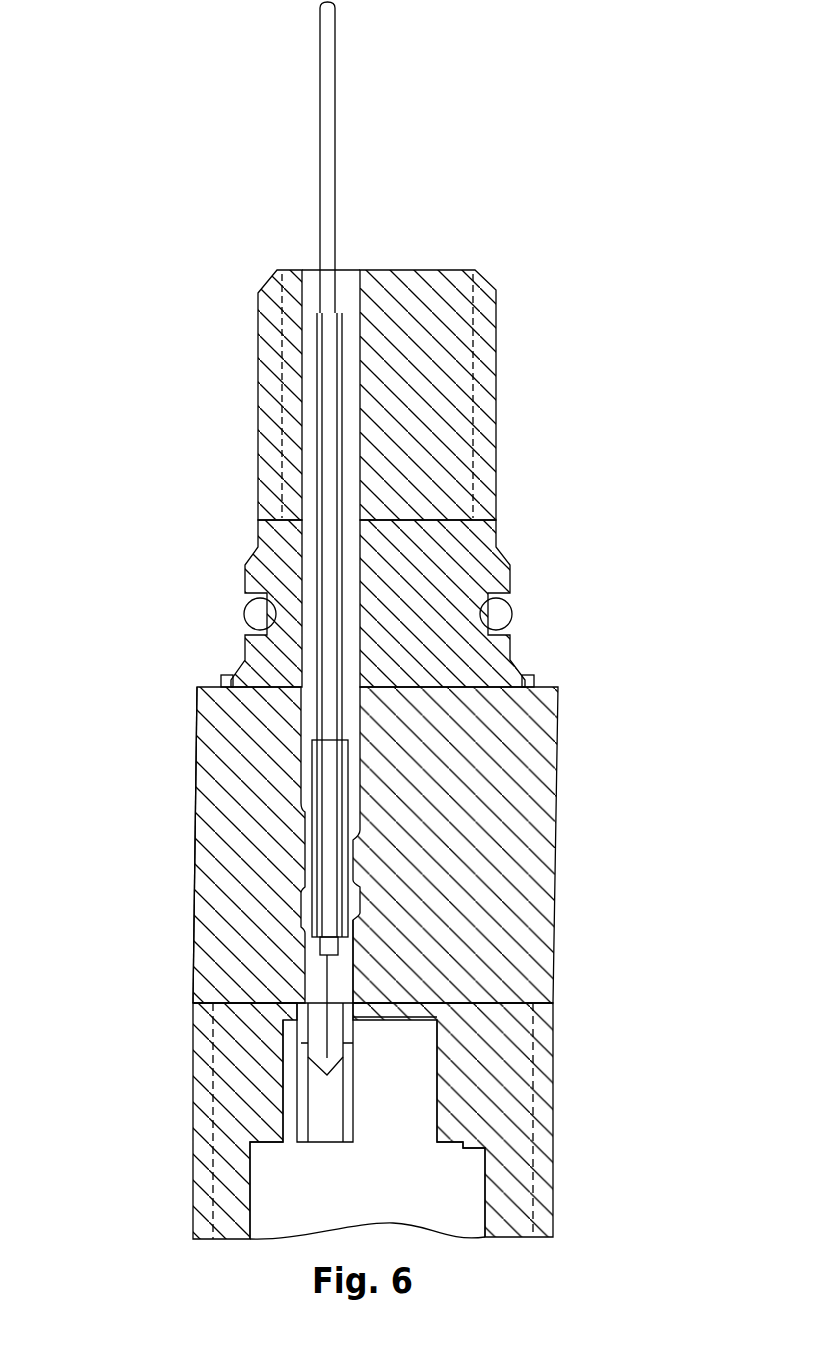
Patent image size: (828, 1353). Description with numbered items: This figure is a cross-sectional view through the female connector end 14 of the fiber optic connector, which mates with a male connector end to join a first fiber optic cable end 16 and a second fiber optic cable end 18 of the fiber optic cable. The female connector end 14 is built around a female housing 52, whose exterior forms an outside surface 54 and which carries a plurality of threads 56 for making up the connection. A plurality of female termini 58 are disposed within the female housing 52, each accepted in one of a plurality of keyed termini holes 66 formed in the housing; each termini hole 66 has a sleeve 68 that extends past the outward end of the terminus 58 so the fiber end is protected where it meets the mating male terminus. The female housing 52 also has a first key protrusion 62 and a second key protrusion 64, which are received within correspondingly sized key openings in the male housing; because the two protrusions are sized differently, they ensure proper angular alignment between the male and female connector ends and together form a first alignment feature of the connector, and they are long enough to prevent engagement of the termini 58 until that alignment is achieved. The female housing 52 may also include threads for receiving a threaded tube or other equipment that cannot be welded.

The female connector end 14 is at (167, 733).
The first fiber optic cable end 16 is at (475, 348).
The second fiber optic cable end 18 is at (329, 211).
The female housing 52 is at (193, 806).
The outside surface 54 is at (196, 927).
The threads 56 is at (202, 1190).
The female termini 58 is at (313, 973).
The first key protrusion 62 is at (458, 1133).
The second key protrusion 64 is at (267, 1130).
The keyed termini holes 66 is at (353, 967).
The sleeve 68 is at (323, 1102).